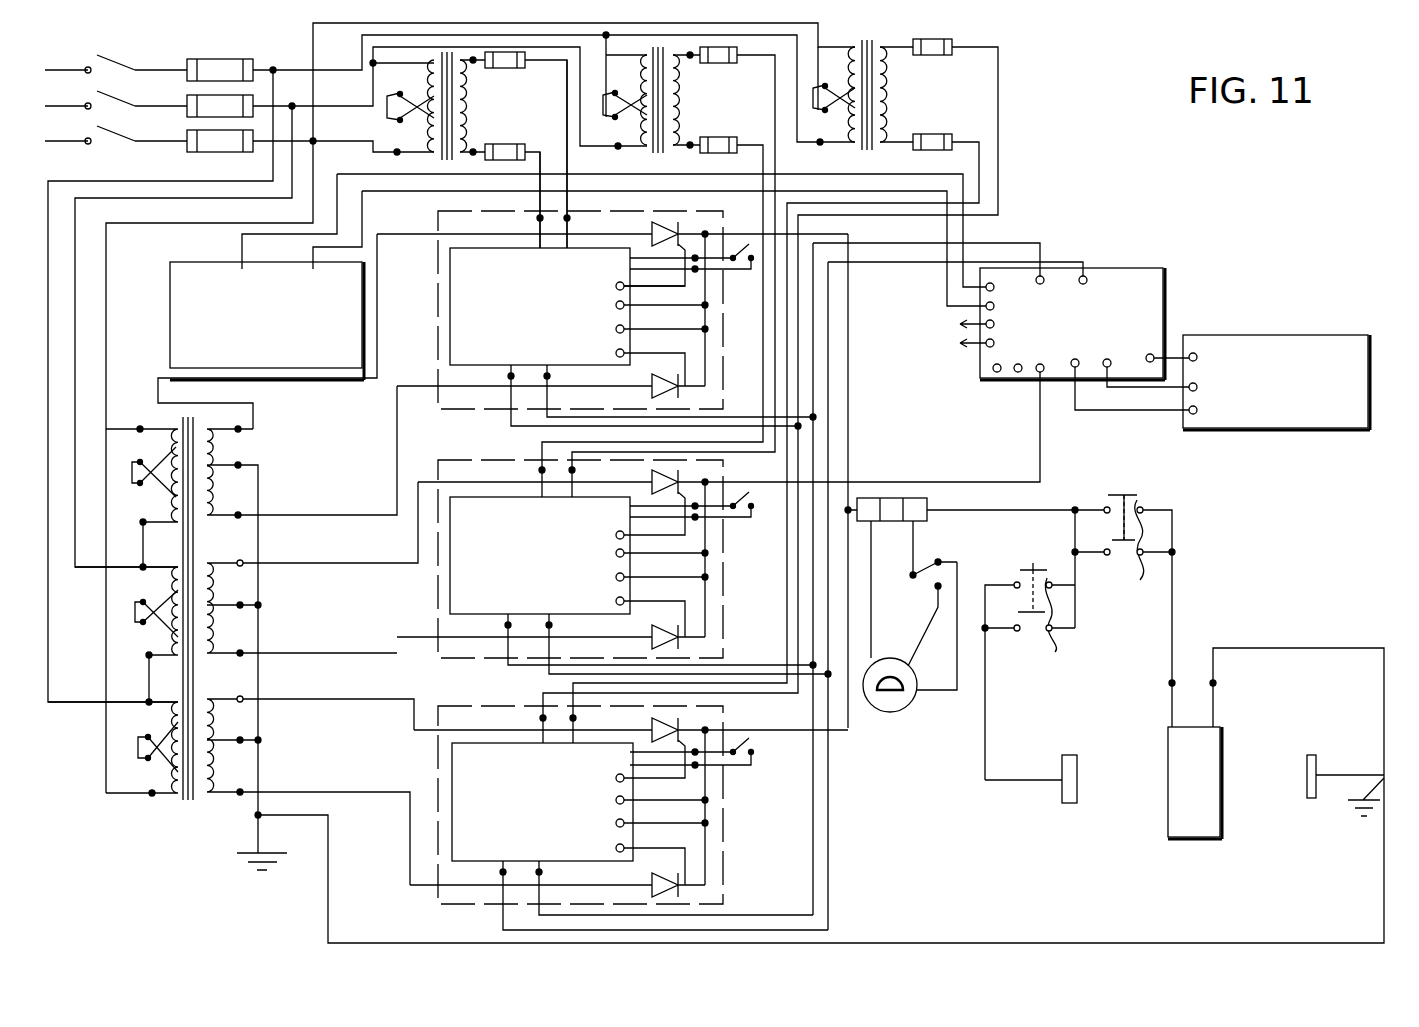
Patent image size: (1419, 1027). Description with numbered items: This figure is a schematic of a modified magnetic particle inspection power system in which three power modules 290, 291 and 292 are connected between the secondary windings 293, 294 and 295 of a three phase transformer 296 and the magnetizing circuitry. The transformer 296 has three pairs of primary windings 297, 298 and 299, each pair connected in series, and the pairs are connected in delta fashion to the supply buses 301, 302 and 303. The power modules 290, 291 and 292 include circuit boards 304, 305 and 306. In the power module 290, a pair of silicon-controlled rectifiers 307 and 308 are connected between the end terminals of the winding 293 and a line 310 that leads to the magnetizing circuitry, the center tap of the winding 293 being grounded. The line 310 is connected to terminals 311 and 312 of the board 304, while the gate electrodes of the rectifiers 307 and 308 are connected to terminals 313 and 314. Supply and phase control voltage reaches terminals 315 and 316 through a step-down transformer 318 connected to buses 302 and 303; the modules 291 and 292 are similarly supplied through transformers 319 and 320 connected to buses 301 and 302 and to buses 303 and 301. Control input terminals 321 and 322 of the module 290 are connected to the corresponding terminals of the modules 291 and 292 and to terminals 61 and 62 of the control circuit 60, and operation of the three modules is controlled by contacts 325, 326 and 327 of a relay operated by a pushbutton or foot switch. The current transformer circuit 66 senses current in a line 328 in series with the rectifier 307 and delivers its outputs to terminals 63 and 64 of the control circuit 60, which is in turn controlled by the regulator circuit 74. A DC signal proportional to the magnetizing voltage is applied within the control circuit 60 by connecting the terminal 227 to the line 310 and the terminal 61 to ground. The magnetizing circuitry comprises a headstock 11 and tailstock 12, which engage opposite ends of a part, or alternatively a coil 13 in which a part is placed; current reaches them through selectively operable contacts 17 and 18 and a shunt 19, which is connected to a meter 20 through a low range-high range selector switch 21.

The headstock 11 is at (1078, 782).
The tailstock 12 is at (1316, 767).
The coil 13 is at (1218, 736).
The selectively operable contacts 17 is at (1032, 671).
The selectively operable contacts 18 is at (1140, 580).
The shunt 19 is at (893, 522).
The meter 20 is at (905, 708).
The low range-high range selector switch 21 is at (922, 585).
The control circuit 60 is at (1162, 290).
The terminal of control circuit 61 is at (1085, 276).
The terminal of control circuit 62 is at (1042, 276).
The terminal of control circuit 63 is at (962, 307).
The terminal of control circuit 64 is at (962, 288).
The current transformer circuit 66 is at (170, 312).
The regulator circuit 74 is at (1282, 425).
The terminal 227 is at (1037, 373).
The power module 290 is at (441, 421).
The power module 291 is at (483, 675).
The power module 292 is at (459, 915).
The secondary winding 293 is at (214, 447).
The secondary winding 294 is at (216, 592).
The secondary winding 295 is at (216, 728).
The three phase transformer 296 is at (199, 808).
The pair of primary windings 297 is at (170, 503).
The pair of primary windings 298 is at (172, 636).
The pair of primary windings 299 is at (172, 714).
The supply bus 301 is at (300, 62).
The supply bus 302 is at (318, 72).
The supply bus 303 is at (320, 142).
The circuit board 304 is at (441, 295).
The circuit board 305 is at (440, 588).
The circuit board 306 is at (439, 774).
The silicon-controlled rectifier 307 is at (672, 223).
The silicon-controlled rectifier 308 is at (680, 390).
The line 310 is at (850, 455).
The terminal of board 311 is at (624, 307).
The terminal of board 312 is at (624, 331).
The terminal of board 313 is at (624, 288).
The terminal of board 314 is at (622, 358).
The terminal 315 is at (538, 218).
The terminal 316 is at (569, 218).
The step-down transformer 318 is at (488, 108).
The transformer 319 is at (698, 103).
The transformer 320 is at (903, 99).
The control input terminal 321 is at (509, 377).
The control input terminal 322 is at (546, 378).
The contacts 325 is at (745, 270).
The contacts 326 is at (752, 520).
The contacts 327 is at (755, 766).
The line 328 is at (378, 331).